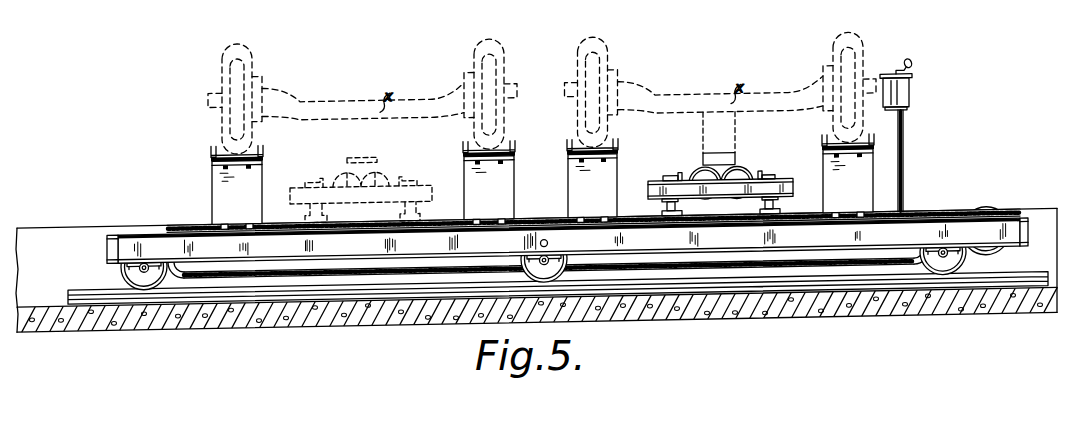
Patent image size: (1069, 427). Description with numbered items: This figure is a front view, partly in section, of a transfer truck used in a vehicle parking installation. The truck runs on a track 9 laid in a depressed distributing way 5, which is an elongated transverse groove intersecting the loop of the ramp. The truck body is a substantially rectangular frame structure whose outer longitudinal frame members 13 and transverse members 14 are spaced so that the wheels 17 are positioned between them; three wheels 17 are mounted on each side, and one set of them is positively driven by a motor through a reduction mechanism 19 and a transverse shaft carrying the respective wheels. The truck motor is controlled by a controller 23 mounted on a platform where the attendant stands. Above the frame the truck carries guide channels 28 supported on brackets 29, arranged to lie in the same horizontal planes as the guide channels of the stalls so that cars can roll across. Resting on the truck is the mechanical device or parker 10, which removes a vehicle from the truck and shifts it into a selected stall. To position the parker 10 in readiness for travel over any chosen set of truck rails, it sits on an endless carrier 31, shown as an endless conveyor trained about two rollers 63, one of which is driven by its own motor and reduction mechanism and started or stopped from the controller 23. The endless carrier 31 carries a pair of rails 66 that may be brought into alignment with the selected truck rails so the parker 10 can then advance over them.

The distributing way 5 is at (1040, 228).
The track 9 is at (1033, 268).
The mechanical device 10 is at (344, 206).
The outer longitudinal frame member 13 is at (953, 207).
The transverse member 14 is at (117, 240).
The wheel 17 is at (133, 265).
The reduction mechanism 19 is at (982, 212).
The controller 23 is at (910, 98).
The guide channel 28 is at (263, 142).
The bracket 29 is at (228, 184).
The endless carrier 31 is at (432, 218).
The roller 63 is at (190, 272).
The rail 66 is at (663, 211).